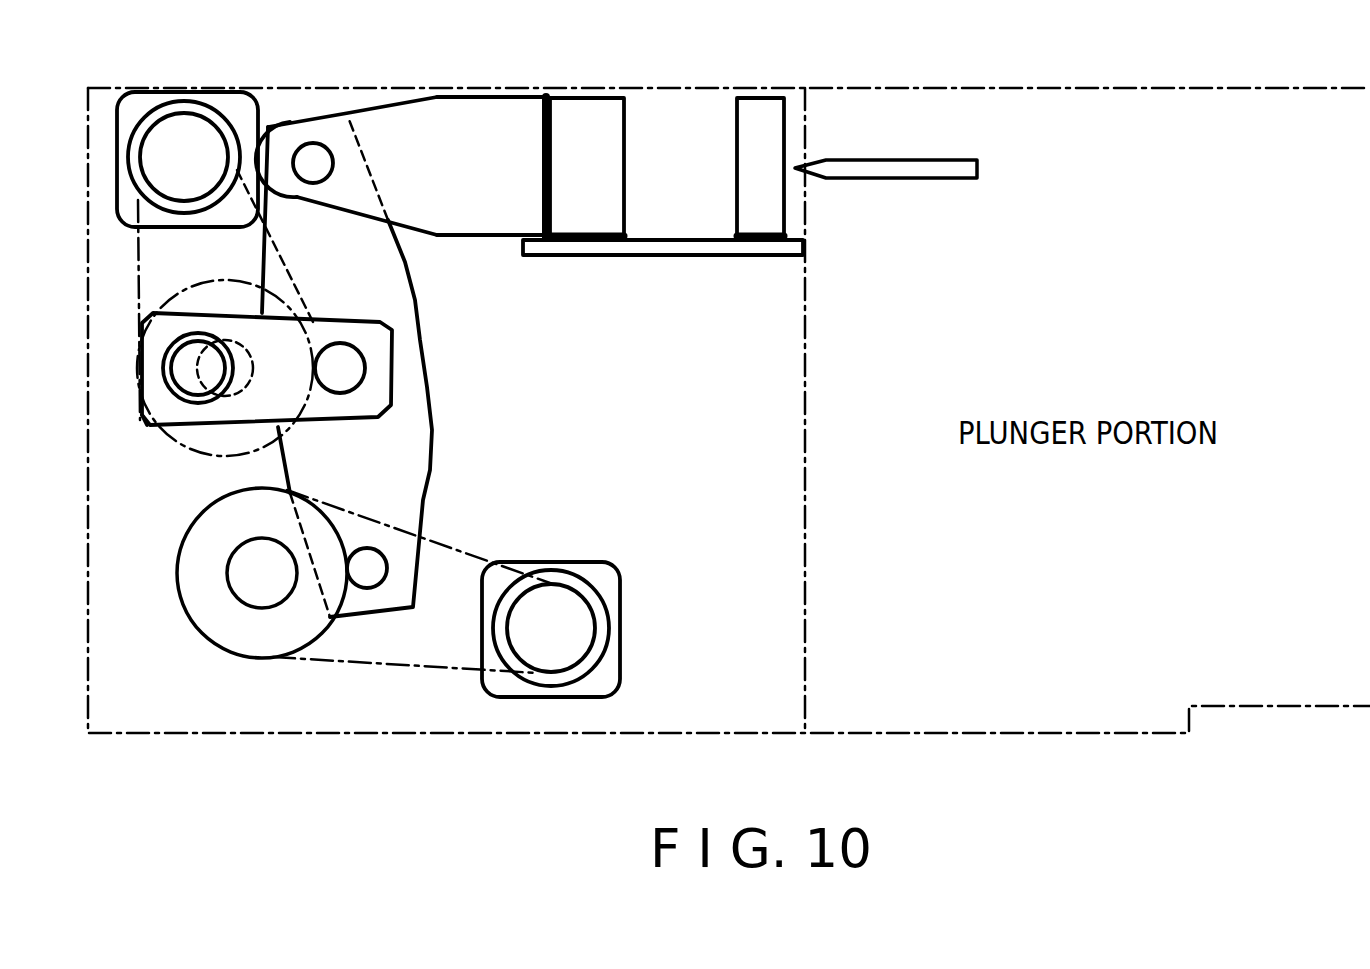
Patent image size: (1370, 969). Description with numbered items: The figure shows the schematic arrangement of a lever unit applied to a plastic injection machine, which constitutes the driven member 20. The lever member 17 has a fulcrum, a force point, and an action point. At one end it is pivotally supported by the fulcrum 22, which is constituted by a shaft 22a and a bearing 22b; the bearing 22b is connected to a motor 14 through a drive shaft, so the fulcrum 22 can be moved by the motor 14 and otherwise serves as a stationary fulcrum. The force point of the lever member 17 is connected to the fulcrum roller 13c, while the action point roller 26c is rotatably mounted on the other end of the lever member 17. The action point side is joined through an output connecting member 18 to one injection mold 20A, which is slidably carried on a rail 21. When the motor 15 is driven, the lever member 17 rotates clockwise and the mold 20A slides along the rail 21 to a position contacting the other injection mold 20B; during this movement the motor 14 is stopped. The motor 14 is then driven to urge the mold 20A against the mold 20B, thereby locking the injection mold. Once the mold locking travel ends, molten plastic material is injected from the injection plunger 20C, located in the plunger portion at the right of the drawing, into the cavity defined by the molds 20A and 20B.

The fulcrum roller 13c is at (367, 576).
The motor 14 is at (150, 103).
The motor 15 is at (602, 600).
The lever member 17 is at (407, 487).
The output connecting member 18 is at (465, 222).
The driven member 20 is at (663, 216).
The injection mold 20A is at (587, 225).
The injection mold 20B is at (763, 222).
The injection plunger 20C is at (907, 173).
The rail 21 is at (672, 246).
The fulcrum 22 is at (383, 373).
The shaft 22a is at (340, 380).
The bearing 22b is at (170, 410).
The action point roller 26c is at (318, 166).